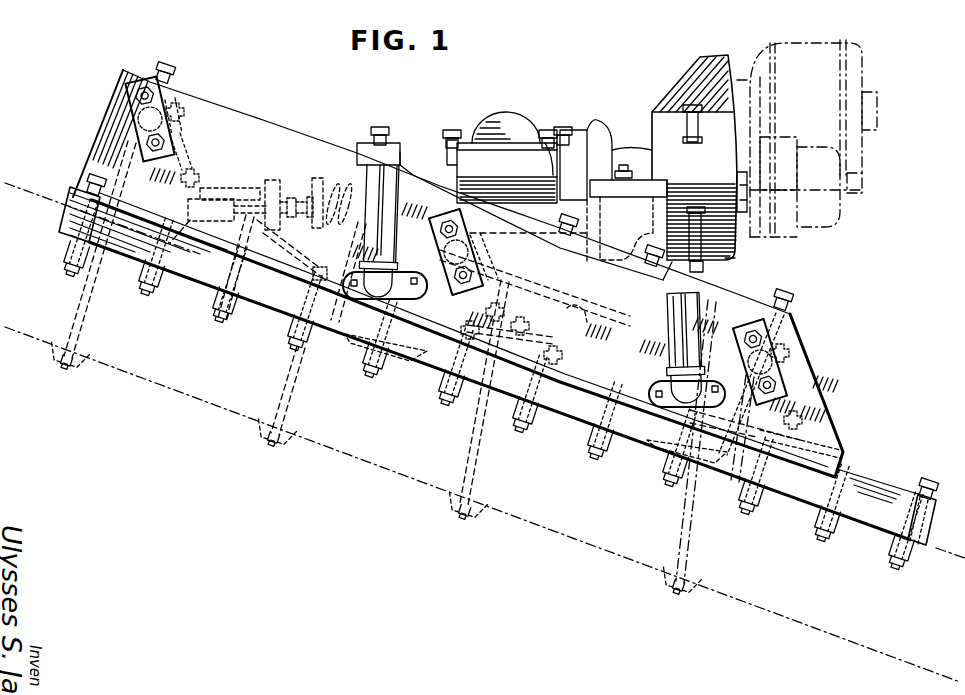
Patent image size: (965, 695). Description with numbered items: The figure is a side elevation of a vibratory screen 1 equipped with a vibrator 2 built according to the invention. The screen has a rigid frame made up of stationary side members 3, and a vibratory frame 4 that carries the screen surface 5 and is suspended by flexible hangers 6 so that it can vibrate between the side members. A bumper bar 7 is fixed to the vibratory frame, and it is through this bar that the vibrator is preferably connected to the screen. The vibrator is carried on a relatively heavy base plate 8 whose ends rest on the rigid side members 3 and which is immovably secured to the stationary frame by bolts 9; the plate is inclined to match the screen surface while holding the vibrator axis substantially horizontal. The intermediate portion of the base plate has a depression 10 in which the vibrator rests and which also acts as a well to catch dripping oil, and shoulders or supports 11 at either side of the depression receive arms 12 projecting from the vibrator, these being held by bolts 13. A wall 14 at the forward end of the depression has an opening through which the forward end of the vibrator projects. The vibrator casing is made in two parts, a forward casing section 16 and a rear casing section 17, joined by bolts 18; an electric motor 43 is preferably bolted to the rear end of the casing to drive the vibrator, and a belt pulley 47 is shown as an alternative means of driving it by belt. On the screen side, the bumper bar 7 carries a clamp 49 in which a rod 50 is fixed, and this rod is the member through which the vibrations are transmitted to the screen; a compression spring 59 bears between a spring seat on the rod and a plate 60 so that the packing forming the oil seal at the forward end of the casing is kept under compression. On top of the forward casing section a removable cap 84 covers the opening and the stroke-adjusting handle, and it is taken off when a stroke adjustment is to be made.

The vibratory screen 1 is at (485, 411).
The vibrator 2 is at (697, 157).
The side members 3 is at (253, 122).
The vibratory frame 4 is at (68, 223).
The screen surface 5 is at (385, 221).
The flexible hangers 6 is at (687, 349).
The bumper bar 7 is at (235, 188).
The base plate 8 is at (636, 264).
The bolts 9 is at (386, 140).
The depression 10 is at (567, 307).
The shoulders or supports 11 is at (668, 185).
The arms 12 is at (618, 187).
The bolts 13 is at (623, 168).
The wall 14 is at (399, 161).
The casing section 16 is at (402, 170).
The casing section 17 is at (718, 259).
The bolts 18 is at (562, 132).
The electric motor 43 is at (858, 44).
The belt pulley 47 is at (785, 234).
The clamp 49 is at (271, 181).
The rod 50 is at (292, 198).
The compression spring 59 is at (333, 215).
The plate 60 is at (319, 178).
The cap 84 is at (516, 116).